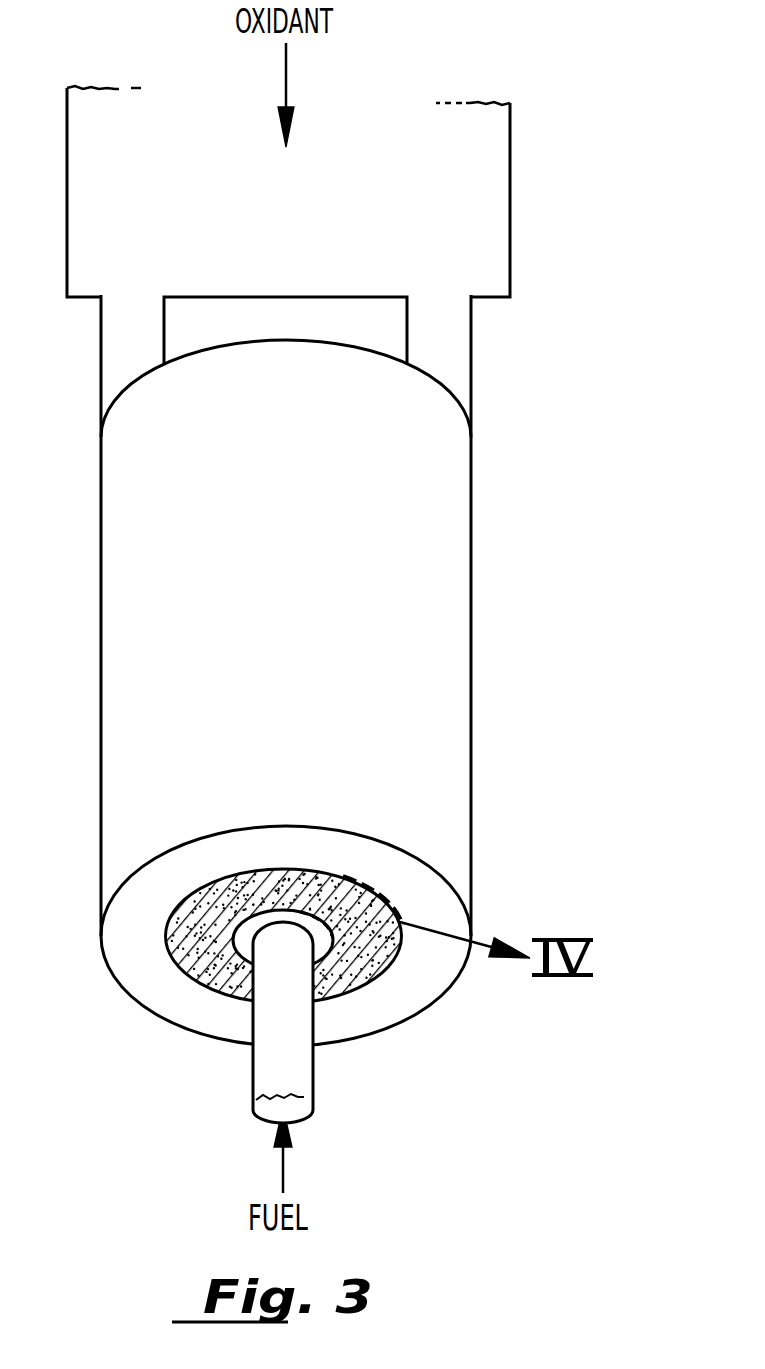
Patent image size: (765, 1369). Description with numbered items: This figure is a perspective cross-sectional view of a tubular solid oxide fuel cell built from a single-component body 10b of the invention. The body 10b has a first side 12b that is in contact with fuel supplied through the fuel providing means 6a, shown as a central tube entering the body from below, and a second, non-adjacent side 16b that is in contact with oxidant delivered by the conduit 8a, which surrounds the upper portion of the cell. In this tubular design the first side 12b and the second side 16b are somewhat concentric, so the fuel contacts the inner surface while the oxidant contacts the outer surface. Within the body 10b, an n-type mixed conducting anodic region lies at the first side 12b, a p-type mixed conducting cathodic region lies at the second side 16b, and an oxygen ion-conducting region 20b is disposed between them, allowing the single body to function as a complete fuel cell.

The fuel providing means 6a is at (290, 1073).
The oxidant conduit 8a is at (485, 208).
The single-component body 10b is at (173, 962).
The first side 12b is at (218, 997).
The second side 16b is at (218, 877).
The oxygen ion-conducting region 20b is at (290, 873).